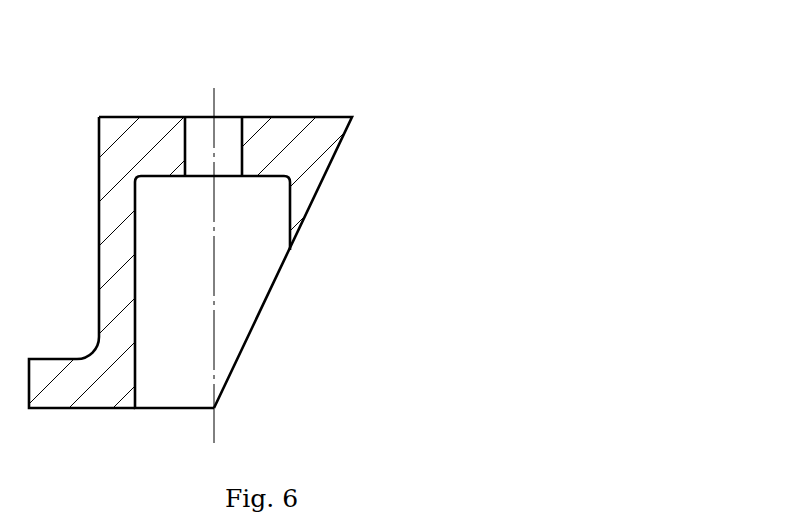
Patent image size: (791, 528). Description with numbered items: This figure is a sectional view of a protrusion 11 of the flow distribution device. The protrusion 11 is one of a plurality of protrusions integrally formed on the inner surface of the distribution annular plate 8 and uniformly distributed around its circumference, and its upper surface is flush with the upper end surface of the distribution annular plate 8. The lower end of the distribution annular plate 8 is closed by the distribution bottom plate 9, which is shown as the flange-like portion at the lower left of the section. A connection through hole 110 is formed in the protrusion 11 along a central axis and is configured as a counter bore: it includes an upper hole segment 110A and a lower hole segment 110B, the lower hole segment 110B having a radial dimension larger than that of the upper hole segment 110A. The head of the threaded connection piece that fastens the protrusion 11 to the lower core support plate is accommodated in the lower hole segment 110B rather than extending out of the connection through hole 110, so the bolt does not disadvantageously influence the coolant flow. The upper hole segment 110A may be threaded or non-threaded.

The distribution annular plate 8 is at (115, 222).
The distribution bottom plate 9 is at (56, 390).
The protrusion 11 is at (315, 140).
The connection through hole 110 is at (205, 132).
The upper hole segment 110A is at (207, 162).
The lower hole segment 110B is at (220, 295).